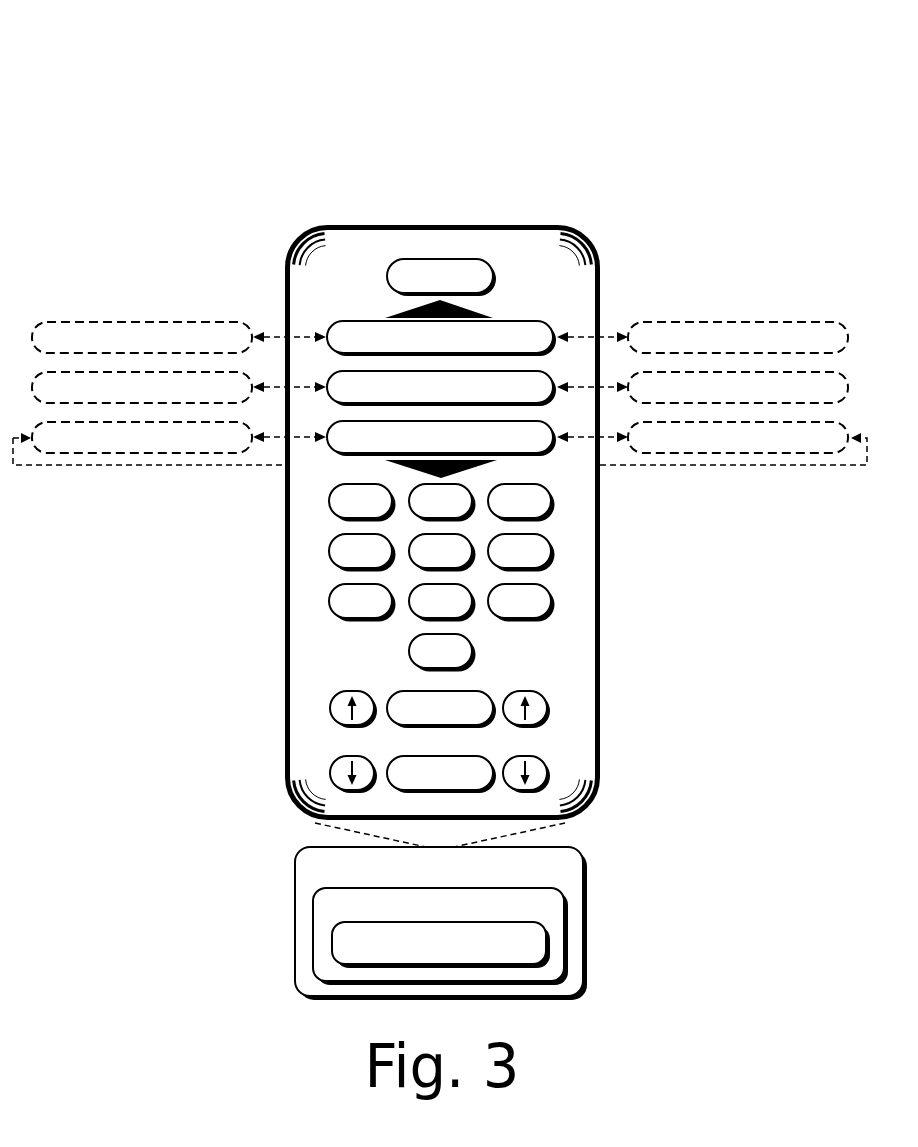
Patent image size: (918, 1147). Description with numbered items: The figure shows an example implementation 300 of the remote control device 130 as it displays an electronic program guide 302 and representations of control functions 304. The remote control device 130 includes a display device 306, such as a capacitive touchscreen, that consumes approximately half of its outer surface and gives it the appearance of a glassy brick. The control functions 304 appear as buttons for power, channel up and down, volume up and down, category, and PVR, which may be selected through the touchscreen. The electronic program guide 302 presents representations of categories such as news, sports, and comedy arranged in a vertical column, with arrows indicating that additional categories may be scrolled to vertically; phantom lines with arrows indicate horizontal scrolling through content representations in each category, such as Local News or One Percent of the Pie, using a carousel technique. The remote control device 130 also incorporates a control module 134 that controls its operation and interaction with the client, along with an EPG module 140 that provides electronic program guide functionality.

The example implementation 300 is at (201, 72).
The electronic program guide 302 is at (576, 314).
The control functions 304 is at (306, 671).
The display device 306 is at (366, 252).
The remote control device 130 is at (441, 923).
The control module 134 is at (440, 936).
The EPG module 140 is at (441, 945).